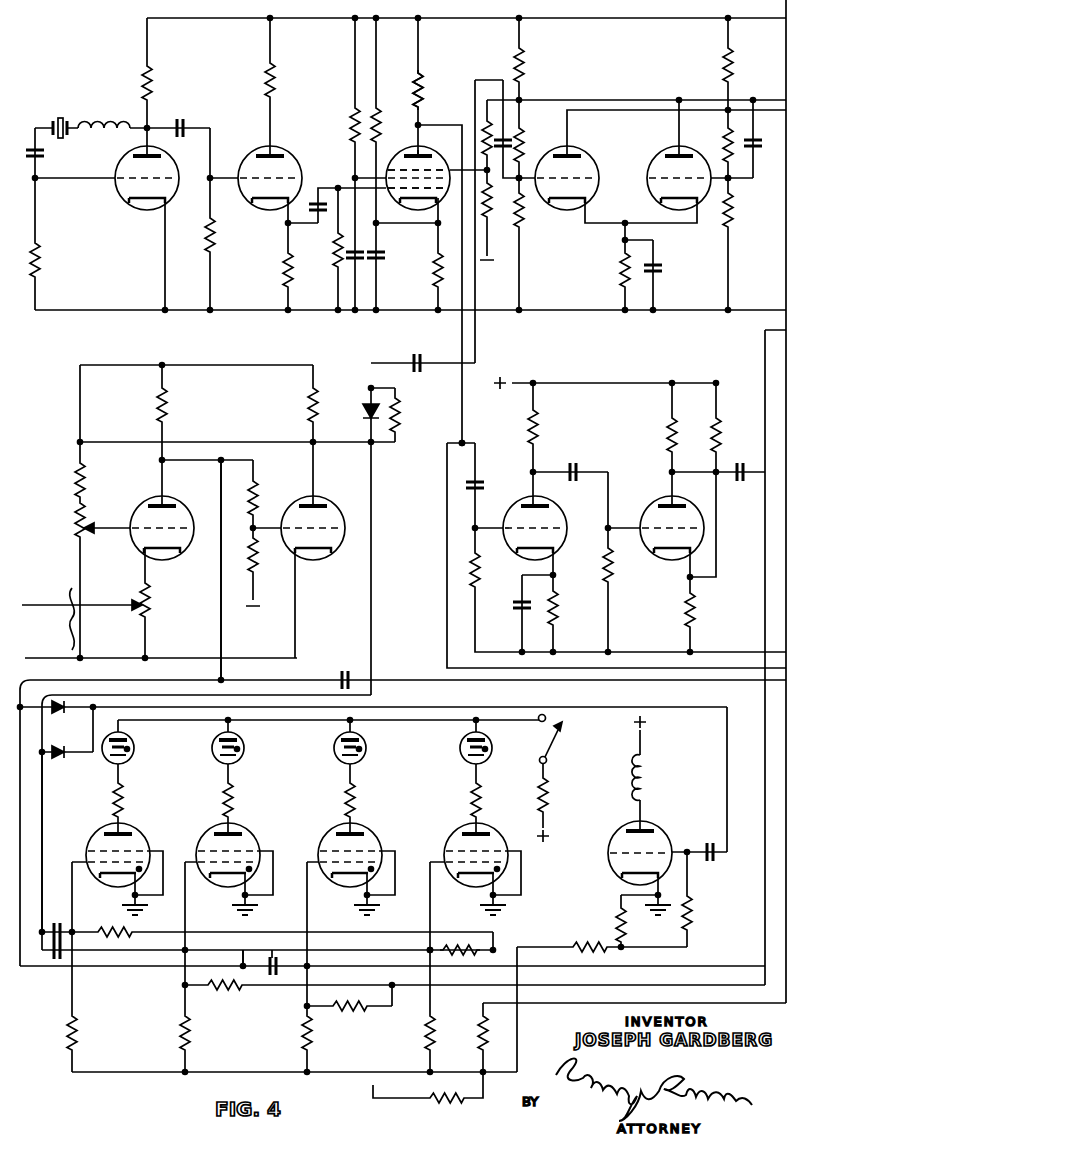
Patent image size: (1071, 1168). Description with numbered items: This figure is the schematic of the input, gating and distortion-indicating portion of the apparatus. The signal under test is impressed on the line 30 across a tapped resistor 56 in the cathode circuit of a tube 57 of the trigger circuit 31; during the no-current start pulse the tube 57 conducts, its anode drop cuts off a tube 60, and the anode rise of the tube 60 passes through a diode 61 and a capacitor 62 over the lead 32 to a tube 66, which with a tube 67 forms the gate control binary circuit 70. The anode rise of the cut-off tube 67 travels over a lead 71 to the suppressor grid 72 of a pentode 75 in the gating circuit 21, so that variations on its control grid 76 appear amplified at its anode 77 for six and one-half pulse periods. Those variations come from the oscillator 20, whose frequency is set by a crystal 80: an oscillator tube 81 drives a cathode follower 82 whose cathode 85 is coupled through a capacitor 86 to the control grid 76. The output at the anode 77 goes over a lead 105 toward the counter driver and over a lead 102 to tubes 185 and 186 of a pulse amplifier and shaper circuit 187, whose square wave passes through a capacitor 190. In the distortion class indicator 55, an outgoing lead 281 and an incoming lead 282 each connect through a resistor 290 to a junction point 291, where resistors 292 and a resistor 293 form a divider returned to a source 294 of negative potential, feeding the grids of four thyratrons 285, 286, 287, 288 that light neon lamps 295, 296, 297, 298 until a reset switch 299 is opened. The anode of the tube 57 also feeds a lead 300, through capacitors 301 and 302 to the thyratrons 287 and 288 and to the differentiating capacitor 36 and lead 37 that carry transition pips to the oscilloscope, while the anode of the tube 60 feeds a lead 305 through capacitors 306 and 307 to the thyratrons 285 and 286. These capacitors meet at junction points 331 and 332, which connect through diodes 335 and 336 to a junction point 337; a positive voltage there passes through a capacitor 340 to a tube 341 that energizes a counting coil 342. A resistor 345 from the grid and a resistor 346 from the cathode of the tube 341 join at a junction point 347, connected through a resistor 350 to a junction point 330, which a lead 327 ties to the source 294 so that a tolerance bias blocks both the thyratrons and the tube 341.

The oscillator 20 is at (133, 105).
The gating circuit 21 is at (430, 106).
The line 30 is at (85, 635).
The trigger circuit 31 is at (71, 482).
The lead 32 is at (478, 334).
The differentiating capacitor 36 is at (339, 674).
The lead 37 is at (524, 688).
The distortion class indicator 55 is at (63, 988).
The tapped resistor 56 is at (156, 592).
The tube 57 is at (146, 499).
The tube 60 is at (300, 499).
The diode 61 is at (362, 420).
The capacitor 62 is at (419, 378).
The tube 66 is at (563, 144).
The tube 67 is at (682, 145).
The gate control binary circuit 70 is at (635, 159).
The lead 71 is at (606, 100).
The suppressor grid 72 is at (429, 170).
The pentode 75 is at (406, 153).
The control grid 76 is at (407, 194).
The anode 77 is at (416, 151).
The crystal 80 is at (58, 114).
The oscillator tube 81 is at (131, 160).
The cathode follower 82 is at (293, 153).
The cathode 85 is at (263, 213).
The capacitor 86 is at (326, 218).
The lead 102 is at (460, 333).
The lead 105 is at (447, 528).
The tube 185 is at (528, 500).
The tube 186 is at (658, 500).
The pulse amplifier and shaper circuit 187 is at (623, 463).
The capacitor 190 is at (759, 459).
The outgoing lead 281 is at (612, 964).
The incoming lead 282 is at (580, 984).
The thyratron 285 is at (96, 834).
The thyratron 286 is at (208, 834).
The thyratron 287 is at (330, 834).
The thyratron 288 is at (456, 834).
The resistor 290 is at (132, 932).
The junction point 291 is at (72, 932).
The resistors 292 is at (78, 1018).
The resistor 293 is at (450, 1093).
The source of negative potential 294 is at (372, 1086).
The neon lamp 295 is at (129, 763).
The neon lamp 296 is at (240, 763).
The neon lamp 297 is at (362, 763).
The neon lamp 298 is at (482, 763).
The reset switch 299 is at (550, 775).
The lead 300 is at (221, 636).
The capacitor 301 is at (272, 957).
The capacitor 302 is at (364, 970).
The lead 305 is at (375, 492).
The capacitor 306 is at (59, 928).
The capacitor 307 is at (54, 965).
The lead 327 is at (550, 1002).
The junction point 330 is at (482, 1057).
The junction point 331 is at (48, 769).
The junction point 332 is at (20, 690).
The diode 335 is at (62, 742).
The diode 336 is at (54, 715).
The junction point 337 is at (93, 707).
The capacitor 340 is at (709, 840).
The tube 341 is at (620, 831).
The coil 342 is at (646, 770).
The resistor 345 is at (685, 909).
The resistor 346 is at (610, 915).
The junction point 347 is at (622, 946).
The resistor 350 is at (572, 942).